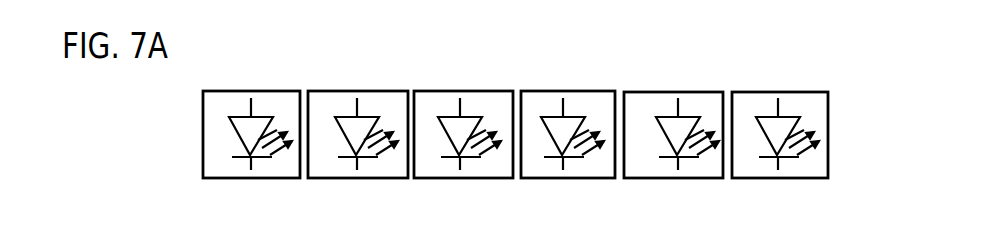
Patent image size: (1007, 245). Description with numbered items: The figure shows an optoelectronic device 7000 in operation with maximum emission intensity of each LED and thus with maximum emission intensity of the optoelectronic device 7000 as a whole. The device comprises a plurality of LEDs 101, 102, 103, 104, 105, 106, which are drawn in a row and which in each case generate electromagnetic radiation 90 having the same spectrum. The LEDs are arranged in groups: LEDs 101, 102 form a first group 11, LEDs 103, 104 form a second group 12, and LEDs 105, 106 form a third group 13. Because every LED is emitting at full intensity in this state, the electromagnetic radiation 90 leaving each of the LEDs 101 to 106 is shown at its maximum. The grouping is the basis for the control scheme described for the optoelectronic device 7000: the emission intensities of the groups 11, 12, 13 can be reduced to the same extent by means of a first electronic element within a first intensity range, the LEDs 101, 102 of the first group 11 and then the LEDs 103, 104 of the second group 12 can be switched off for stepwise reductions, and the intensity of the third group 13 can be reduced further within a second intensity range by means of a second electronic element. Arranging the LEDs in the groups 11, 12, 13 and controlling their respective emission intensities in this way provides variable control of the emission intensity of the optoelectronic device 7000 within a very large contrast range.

The optoelectronic device 7000 is at (303, 34).
The first group 11 is at (392, 184).
The second group 12 is at (615, 184).
The third group 13 is at (833, 184).
The LED 101 is at (262, 114).
The LED 102 is at (367, 115).
The LED 103 is at (470, 115).
The LED 104 is at (553, 115).
The LED 105 is at (670, 117).
The LED 106 is at (821, 92).
The electromagnetic radiation 90 is at (820, 128).